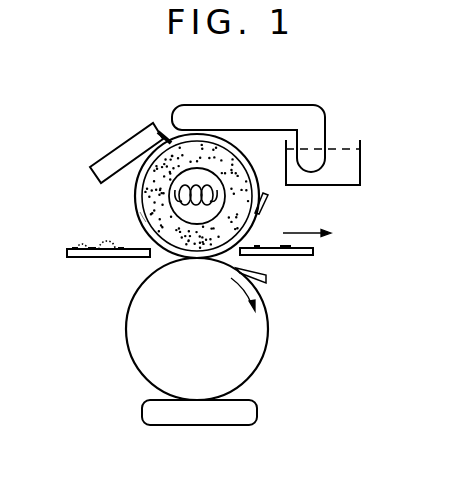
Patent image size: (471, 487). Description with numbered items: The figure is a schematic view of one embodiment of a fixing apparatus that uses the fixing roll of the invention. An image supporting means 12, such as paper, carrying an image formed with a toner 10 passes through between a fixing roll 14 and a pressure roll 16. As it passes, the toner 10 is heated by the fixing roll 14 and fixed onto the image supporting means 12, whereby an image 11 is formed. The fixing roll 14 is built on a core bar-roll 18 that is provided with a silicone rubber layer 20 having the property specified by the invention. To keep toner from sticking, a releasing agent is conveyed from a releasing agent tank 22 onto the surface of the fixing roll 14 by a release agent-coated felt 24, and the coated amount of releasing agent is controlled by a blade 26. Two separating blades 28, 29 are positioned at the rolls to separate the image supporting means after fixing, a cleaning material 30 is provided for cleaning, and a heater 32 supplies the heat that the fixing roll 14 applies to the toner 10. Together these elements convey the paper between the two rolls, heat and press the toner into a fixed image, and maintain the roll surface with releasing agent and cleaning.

The toner 10 is at (78, 246).
The image 11 is at (256, 248).
The image supporting means 12 is at (100, 258).
The fixing roll 14 is at (134, 193).
The pressure roll 16 is at (268, 336).
The core bar-roll 18 is at (145, 225).
The silicone rubber layer 20 is at (169, 133).
The releasing agent tank 22 is at (362, 163).
The release agent-coated felt 24 is at (283, 105).
The blade 26 is at (118, 146).
The separating blade 28 is at (266, 194).
The separating blade 29 is at (267, 280).
The cleaning material 30 is at (258, 413).
The heater 32 is at (214, 179).